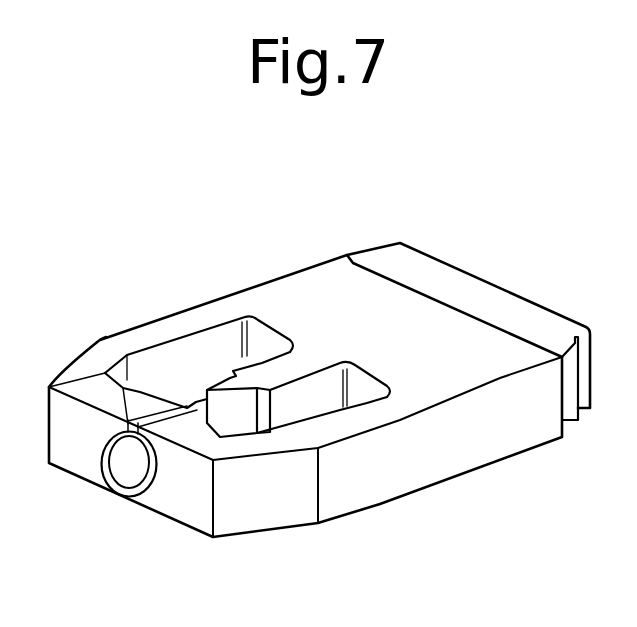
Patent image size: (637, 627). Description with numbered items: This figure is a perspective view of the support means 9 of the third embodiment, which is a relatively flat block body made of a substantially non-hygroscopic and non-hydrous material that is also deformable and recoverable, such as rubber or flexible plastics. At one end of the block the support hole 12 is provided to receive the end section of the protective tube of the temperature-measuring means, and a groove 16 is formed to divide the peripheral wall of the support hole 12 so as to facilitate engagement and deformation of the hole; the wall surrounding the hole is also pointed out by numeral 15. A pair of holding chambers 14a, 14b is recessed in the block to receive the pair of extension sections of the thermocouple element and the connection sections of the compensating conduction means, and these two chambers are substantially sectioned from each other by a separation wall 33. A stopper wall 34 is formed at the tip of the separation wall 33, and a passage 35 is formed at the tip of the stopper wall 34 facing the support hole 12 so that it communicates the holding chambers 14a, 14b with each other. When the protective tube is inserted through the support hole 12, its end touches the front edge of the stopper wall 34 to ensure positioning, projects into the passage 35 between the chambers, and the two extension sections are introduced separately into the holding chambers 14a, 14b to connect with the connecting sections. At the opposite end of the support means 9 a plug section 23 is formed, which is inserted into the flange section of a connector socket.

The support means 9 is at (462, 477).
The support hole 12 is at (133, 472).
The first holding chamber 14a is at (200, 342).
The second holding chamber 14b is at (360, 393).
The cylindrical wall 15 is at (113, 479).
The groove 16 is at (80, 372).
The plug section 23 is at (495, 305).
The separation wall 33 is at (264, 373).
The stopper wall 34 is at (230, 415).
The passage 35 is at (202, 403).